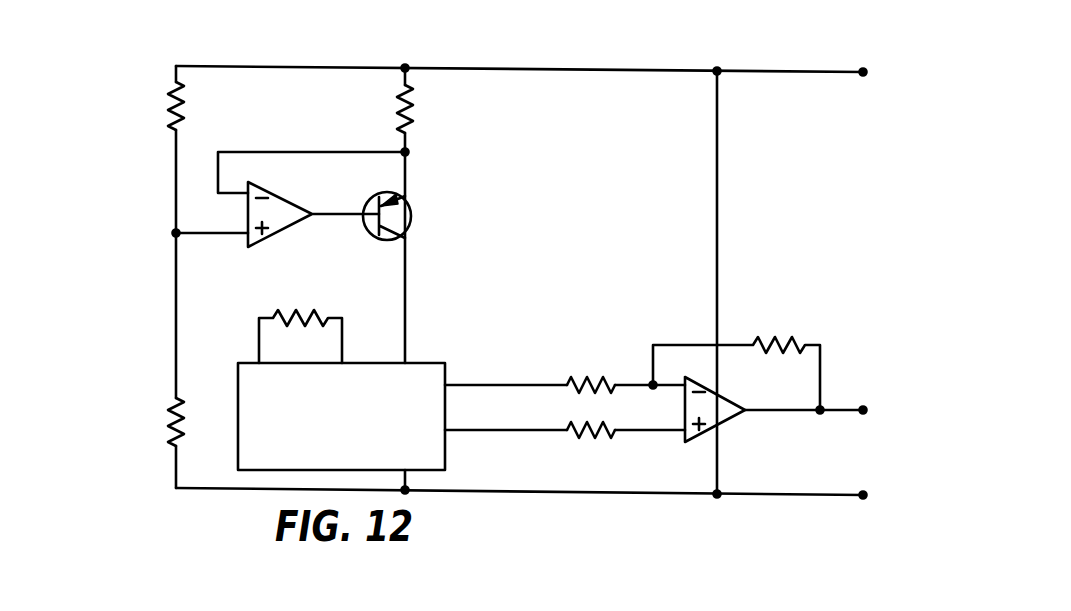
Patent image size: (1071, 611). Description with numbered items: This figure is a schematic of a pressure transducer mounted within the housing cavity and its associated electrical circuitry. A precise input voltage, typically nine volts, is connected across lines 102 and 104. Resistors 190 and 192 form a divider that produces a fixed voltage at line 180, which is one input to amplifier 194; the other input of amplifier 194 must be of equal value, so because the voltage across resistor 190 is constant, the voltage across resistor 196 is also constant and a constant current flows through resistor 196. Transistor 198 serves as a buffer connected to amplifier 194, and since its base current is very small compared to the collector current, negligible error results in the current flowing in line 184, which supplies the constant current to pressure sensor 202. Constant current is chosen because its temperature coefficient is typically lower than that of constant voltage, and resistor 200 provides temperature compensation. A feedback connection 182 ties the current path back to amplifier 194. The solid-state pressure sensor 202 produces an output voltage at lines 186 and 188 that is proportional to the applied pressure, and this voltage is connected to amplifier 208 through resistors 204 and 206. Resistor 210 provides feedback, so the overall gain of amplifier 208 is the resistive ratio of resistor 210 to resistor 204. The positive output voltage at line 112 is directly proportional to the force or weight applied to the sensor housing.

The input voltage line 102 is at (778, 72).
The input voltage line 104 is at (816, 494).
The output line 112 is at (821, 377).
The fixed voltage line 180 is at (175, 178).
The feedback line 182 is at (352, 152).
The constant current line 184 is at (406, 273).
The sensor output line 186 is at (484, 385).
The sensor output line 188 is at (498, 431).
The resistor 190 is at (170, 106).
The resistor 192 is at (170, 420).
The amplifier 194 is at (272, 200).
The resistor 196 is at (416, 111).
The transistor 198 is at (409, 211).
The resistor 200 is at (300, 313).
The pressure sensor 202 is at (426, 368).
The resistor 204 is at (572, 382).
The resistor 206 is at (585, 438).
The amplifier 208 is at (720, 420).
The feedback resistor 210 is at (760, 336).